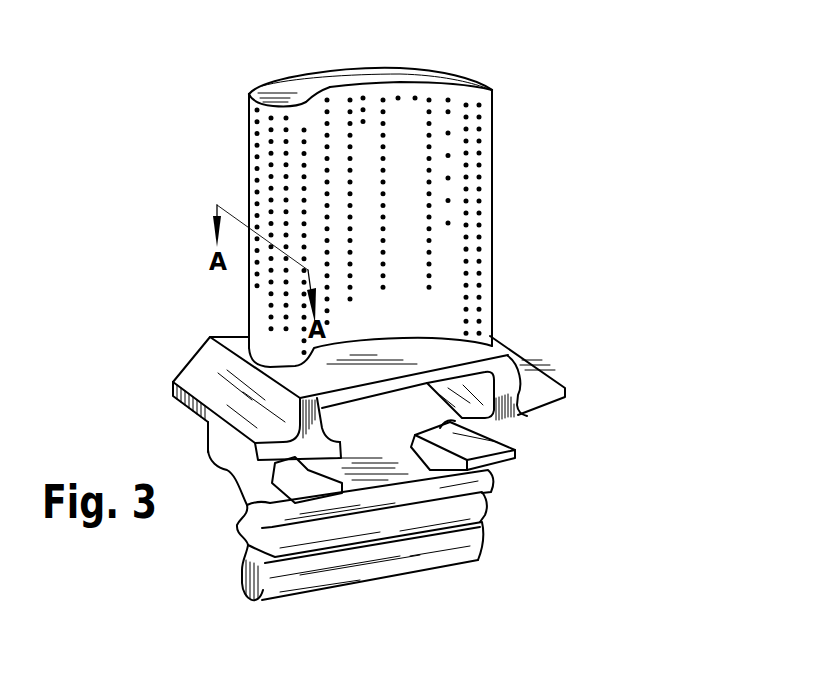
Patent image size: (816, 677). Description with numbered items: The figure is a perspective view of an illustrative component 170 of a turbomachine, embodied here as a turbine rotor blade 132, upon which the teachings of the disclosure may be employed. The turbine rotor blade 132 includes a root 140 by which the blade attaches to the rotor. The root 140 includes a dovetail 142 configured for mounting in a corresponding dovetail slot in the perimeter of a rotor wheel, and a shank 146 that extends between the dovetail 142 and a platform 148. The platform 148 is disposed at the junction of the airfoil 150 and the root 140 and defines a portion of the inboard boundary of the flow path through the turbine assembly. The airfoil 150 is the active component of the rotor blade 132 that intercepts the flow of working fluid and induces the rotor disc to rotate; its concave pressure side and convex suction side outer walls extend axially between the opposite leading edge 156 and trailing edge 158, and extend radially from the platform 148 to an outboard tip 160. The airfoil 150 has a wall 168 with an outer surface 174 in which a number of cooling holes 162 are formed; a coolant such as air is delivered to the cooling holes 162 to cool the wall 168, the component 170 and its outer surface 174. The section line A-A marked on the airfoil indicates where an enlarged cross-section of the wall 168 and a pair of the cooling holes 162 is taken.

The turbine rotor blade 132 is at (522, 204).
The component 170 is at (415, 193).
The root 140 is at (536, 519).
The dovetail 142 is at (250, 570).
The shank 146 is at (493, 438).
The platform 148 is at (205, 418).
The airfoil 150 is at (420, 326).
The leading edge 156 is at (250, 205).
The trailing edge 158 is at (492, 252).
The outboard tip 160 is at (306, 92).
The cooling holes 162 is at (257, 170).
The wall 168 is at (282, 84).
The outer surface 174 is at (417, 176).